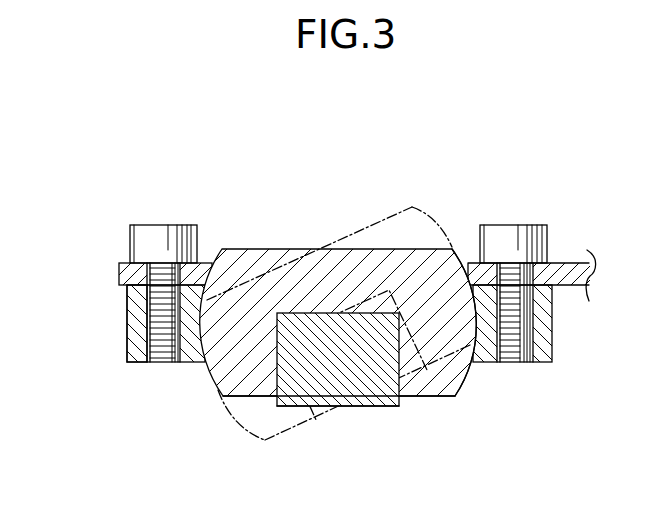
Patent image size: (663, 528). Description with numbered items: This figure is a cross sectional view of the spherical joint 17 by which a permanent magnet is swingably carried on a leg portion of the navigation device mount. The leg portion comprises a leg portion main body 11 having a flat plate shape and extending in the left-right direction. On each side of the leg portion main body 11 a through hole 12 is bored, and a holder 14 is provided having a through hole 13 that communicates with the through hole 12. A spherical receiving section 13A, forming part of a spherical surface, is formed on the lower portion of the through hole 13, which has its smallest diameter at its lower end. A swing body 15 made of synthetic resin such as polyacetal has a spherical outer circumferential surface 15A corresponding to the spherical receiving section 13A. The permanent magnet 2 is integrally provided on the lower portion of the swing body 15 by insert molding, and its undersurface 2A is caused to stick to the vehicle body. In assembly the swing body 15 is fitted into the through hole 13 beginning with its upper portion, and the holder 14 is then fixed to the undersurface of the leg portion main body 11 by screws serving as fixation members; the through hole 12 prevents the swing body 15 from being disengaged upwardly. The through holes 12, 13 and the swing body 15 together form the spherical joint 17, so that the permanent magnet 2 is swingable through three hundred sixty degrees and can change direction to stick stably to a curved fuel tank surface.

The permanent magnet 2 is at (343, 367).
The undersurface of the permanent magnet 2A is at (382, 407).
The leg portion main body 11 is at (556, 263).
The through hole 12 is at (203, 262).
The through hole 13 is at (195, 304).
The spherical receiving section 13A is at (192, 352).
The holder 14 is at (135, 350).
The swing body 15 is at (430, 260).
The spherical outer circumferential surface 15A is at (467, 375).
The spherical joint 17 is at (461, 400).